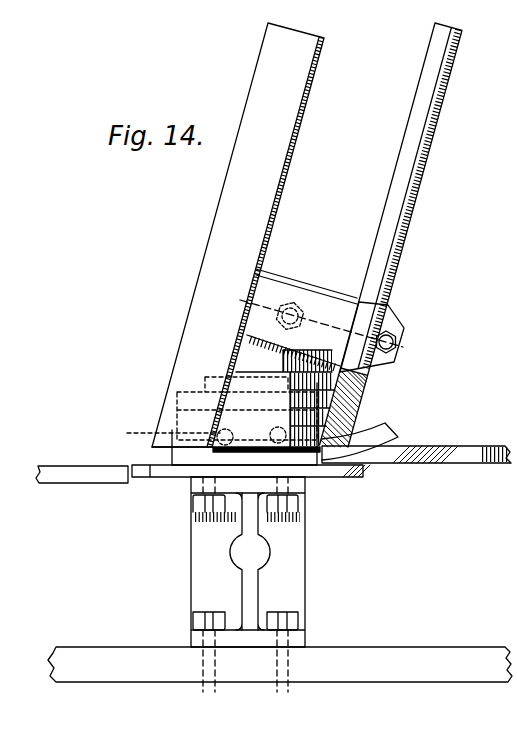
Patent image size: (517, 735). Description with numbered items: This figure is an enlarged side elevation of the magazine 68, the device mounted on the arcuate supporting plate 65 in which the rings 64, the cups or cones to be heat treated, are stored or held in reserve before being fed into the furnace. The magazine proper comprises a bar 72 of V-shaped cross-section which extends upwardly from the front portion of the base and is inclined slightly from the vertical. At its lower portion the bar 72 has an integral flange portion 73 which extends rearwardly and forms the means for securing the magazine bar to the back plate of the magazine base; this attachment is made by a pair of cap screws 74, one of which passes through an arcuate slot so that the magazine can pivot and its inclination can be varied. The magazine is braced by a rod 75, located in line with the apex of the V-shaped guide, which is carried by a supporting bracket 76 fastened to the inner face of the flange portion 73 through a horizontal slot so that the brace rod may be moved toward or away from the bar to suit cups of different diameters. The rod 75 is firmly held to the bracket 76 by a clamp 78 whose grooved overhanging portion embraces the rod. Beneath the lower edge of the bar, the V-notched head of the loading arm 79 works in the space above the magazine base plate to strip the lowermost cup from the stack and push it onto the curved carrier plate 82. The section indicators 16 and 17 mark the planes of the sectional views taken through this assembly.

The bar 72 is at (238, 235).
The rod 75 is at (392, 237).
The flange portion 73 is at (288, 275).
The supporting bracket 76 is at (383, 321).
The clamp 78 is at (378, 362).
The cap screws 74 is at (280, 427).
The curved carrier plate 82 is at (88, 478).
The loading arm 79 is at (472, 457).
The rings 64 is at (287, 575).
The magazine 68 is at (178, 563).
The supporting plate 65 is at (372, 648).
The section line 16- 16 is at (165, 717).
The section line 17- 17 is at (417, 338).